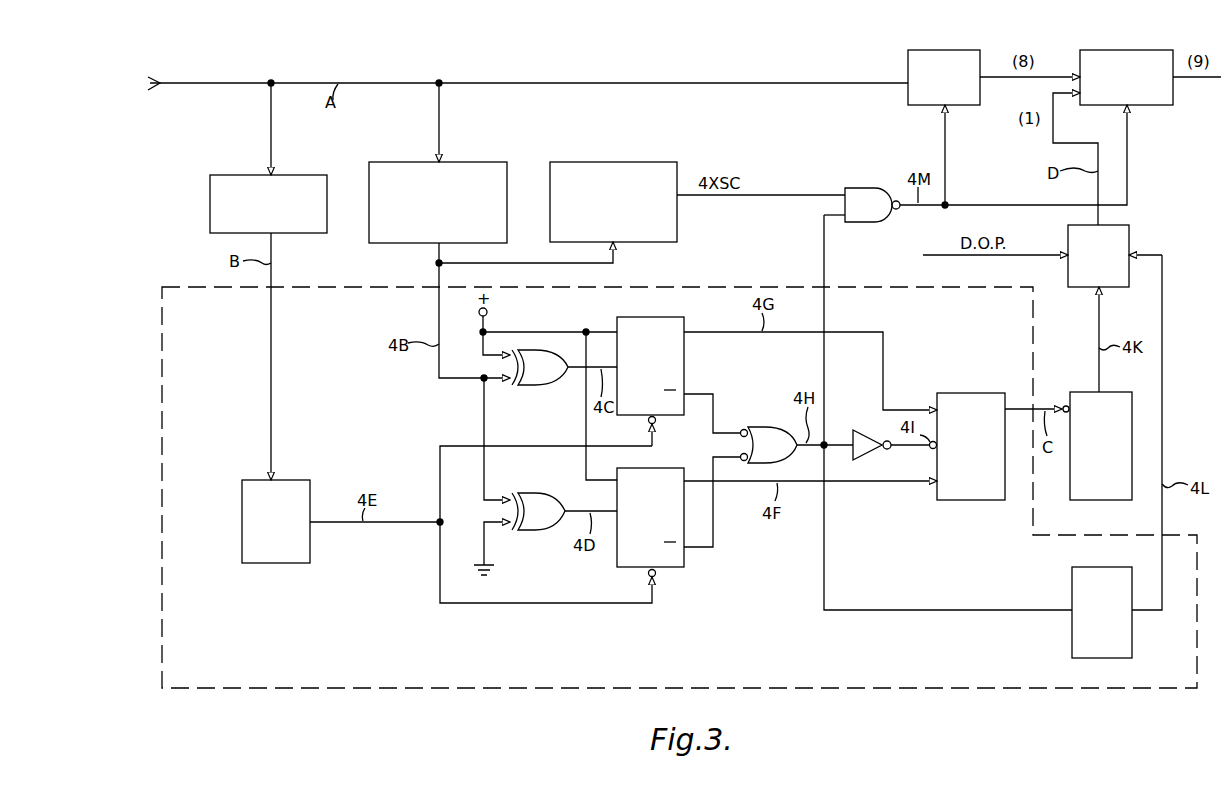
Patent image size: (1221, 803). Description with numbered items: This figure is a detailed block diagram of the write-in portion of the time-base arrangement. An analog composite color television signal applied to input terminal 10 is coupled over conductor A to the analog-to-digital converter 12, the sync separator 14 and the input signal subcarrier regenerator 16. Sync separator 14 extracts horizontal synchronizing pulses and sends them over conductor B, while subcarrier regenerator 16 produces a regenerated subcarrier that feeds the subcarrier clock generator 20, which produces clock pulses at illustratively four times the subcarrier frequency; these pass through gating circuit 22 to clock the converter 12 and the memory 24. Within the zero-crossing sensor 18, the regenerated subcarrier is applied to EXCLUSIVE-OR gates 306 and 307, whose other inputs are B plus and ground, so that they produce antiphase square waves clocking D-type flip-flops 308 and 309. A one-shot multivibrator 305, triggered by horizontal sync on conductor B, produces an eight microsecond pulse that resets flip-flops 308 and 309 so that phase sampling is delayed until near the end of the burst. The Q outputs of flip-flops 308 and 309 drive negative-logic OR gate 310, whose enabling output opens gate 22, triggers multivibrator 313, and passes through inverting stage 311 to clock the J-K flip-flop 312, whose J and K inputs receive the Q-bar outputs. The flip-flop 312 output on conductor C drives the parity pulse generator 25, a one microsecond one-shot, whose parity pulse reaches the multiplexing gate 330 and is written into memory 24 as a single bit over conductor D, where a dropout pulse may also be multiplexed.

The input terminal 10 is at (160, 82).
The sync separator 14 is at (237, 175).
The input signal subcarrier regenerator 16 is at (409, 162).
The subcarrier clock generator 20 is at (607, 162).
The gating circuit 22 is at (858, 187).
The analog-to-digital converter 12 is at (940, 50).
The memory 24 is at (1127, 50).
The multiplexing gate 330 is at (1129, 232).
The zero-crossing sensor 18 is at (737, 687).
The EXCLUSIVE-OR gate 306 is at (538, 386).
The EXCLUSIVE-OR gate 307 is at (535, 493).
The D-type flip-flop 308 is at (684, 360).
The D-type flip-flop 309 is at (677, 468).
The negative-logic OR gate 310 is at (762, 427).
The inverting stage 311 is at (858, 429).
The J-K flip-flop 312 is at (968, 393).
The parity pulse generator 25 is at (1079, 392).
The one-shot multivibrator 305 is at (284, 564).
The multivibrator 313 is at (1072, 586).